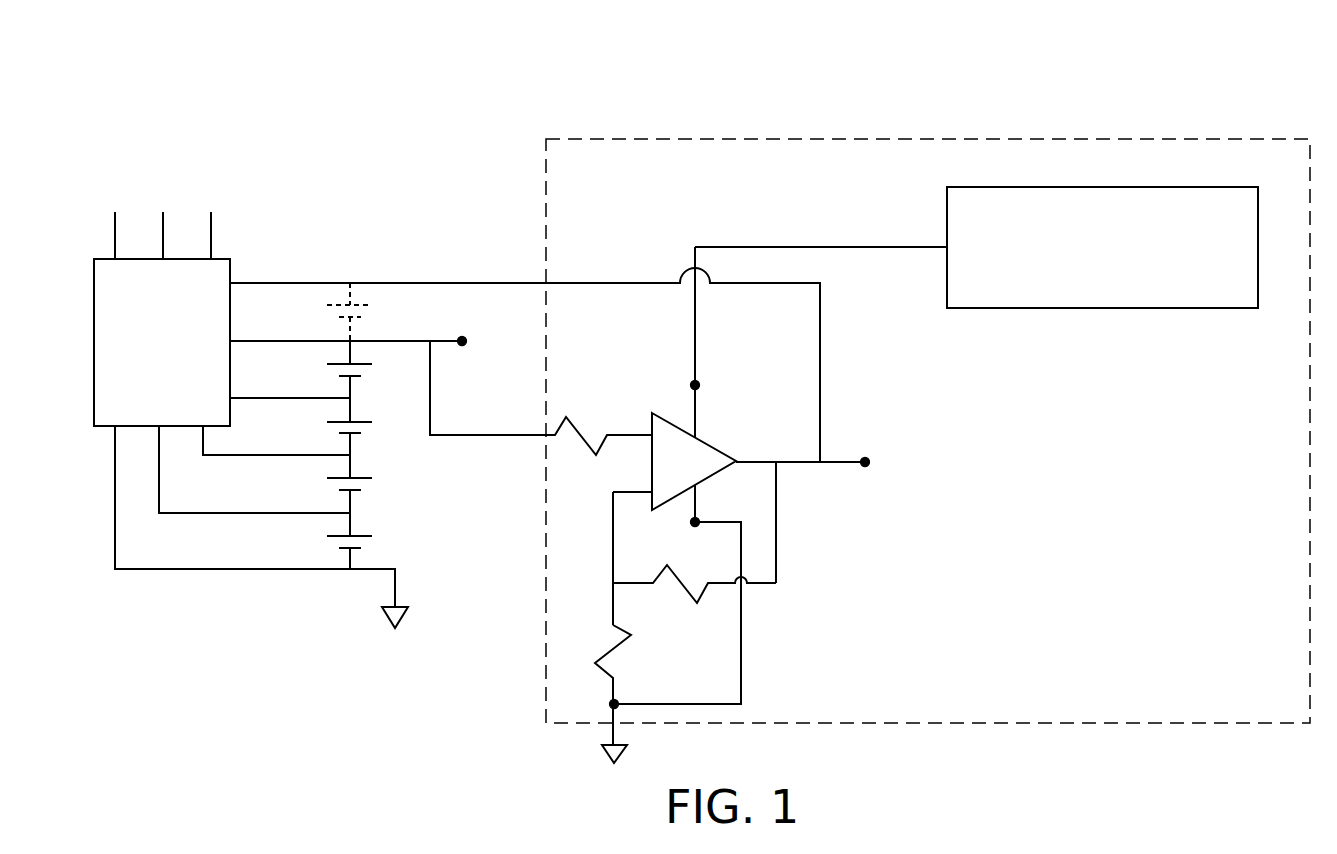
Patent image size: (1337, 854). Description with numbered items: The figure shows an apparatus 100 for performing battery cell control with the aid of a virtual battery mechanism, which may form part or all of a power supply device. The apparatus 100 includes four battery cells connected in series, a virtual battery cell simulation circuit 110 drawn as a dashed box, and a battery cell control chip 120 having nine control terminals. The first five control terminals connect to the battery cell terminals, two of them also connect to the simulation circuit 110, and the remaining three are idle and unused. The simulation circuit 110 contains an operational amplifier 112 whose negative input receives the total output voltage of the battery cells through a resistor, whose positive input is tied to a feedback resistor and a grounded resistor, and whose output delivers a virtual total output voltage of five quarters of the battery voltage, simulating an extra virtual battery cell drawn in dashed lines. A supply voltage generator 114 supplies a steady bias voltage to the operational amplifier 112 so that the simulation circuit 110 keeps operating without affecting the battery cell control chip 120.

The apparatus 100 is at (241, 56).
The virtual battery cell simulation circuit 110 is at (1210, 139).
The operational amplifier 112 is at (710, 442).
The supply voltage generator 114 is at (1225, 187).
The battery cell control chip 120 is at (94, 283).